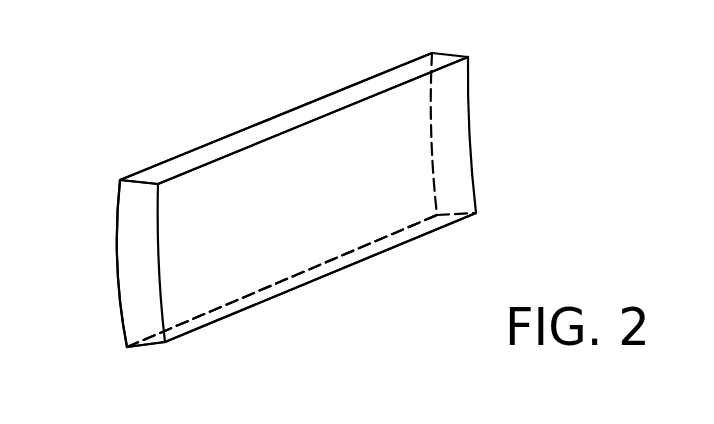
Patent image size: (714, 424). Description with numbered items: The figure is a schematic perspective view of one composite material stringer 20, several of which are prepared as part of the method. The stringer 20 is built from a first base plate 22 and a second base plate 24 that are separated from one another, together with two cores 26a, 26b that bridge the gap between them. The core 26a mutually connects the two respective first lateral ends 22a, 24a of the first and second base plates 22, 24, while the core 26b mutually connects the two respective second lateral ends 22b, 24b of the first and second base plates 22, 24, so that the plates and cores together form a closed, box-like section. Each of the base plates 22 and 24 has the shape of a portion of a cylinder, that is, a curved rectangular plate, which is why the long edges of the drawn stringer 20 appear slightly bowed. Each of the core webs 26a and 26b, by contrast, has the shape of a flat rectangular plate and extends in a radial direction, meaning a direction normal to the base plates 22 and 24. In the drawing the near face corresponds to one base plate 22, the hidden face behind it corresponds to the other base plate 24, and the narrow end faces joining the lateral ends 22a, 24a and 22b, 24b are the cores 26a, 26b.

The composite material stringer 20 is at (512, 121).
The first base plate 22 is at (232, 273).
The first lateral end of first base plate 22a is at (393, 250).
The second lateral end of first base plate 22b is at (320, 118).
The second base plate 24 is at (118, 262).
The first lateral end of second base plate 24a is at (328, 267).
The second lateral end of second base plate 24b is at (270, 118).
The core 26a is at (145, 347).
The core 26b is at (226, 145).